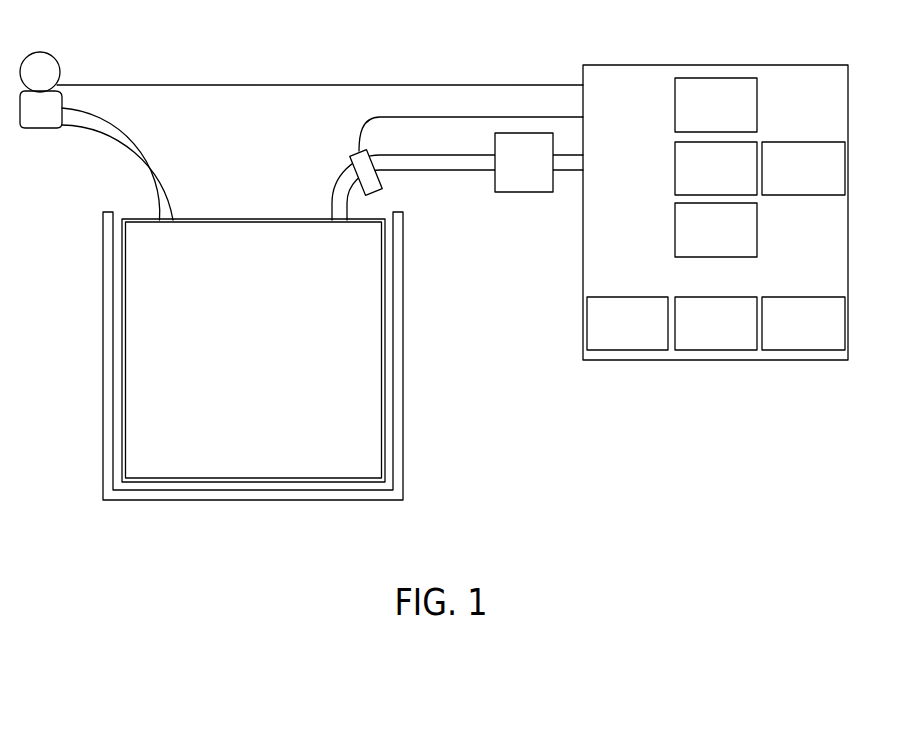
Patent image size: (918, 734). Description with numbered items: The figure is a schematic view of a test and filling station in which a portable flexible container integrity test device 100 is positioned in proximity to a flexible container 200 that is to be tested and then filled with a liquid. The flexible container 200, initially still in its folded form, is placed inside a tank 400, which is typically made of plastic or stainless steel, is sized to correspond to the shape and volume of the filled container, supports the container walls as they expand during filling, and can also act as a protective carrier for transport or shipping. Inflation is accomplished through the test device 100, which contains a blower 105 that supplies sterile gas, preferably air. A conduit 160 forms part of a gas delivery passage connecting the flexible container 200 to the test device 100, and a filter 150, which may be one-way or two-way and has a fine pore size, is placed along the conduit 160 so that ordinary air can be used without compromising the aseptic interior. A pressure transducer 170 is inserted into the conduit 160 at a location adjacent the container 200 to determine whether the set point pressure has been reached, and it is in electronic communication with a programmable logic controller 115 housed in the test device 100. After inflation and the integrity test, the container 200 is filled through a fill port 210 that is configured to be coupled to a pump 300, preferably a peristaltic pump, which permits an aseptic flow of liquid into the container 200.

The portable flexible container integrity test device 100 is at (701, 219).
The blower 105 is at (673, 155).
The programmable logic controller (PLC) 115 is at (673, 243).
The filter 150 is at (520, 192).
The conduit 160 is at (462, 172).
The pressure transducer 170 is at (352, 158).
The flexible container 200 is at (138, 218).
The fill port 210 is at (163, 218).
The pump 300 is at (42, 52).
The tank 400 is at (402, 307).